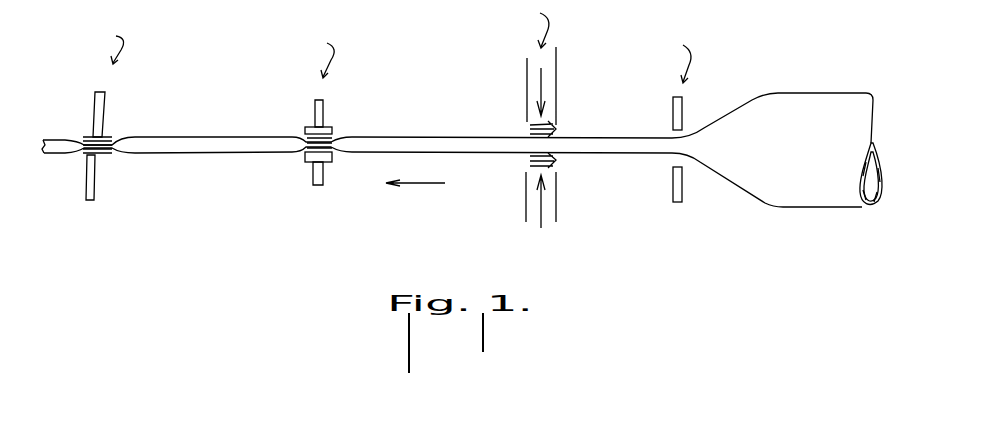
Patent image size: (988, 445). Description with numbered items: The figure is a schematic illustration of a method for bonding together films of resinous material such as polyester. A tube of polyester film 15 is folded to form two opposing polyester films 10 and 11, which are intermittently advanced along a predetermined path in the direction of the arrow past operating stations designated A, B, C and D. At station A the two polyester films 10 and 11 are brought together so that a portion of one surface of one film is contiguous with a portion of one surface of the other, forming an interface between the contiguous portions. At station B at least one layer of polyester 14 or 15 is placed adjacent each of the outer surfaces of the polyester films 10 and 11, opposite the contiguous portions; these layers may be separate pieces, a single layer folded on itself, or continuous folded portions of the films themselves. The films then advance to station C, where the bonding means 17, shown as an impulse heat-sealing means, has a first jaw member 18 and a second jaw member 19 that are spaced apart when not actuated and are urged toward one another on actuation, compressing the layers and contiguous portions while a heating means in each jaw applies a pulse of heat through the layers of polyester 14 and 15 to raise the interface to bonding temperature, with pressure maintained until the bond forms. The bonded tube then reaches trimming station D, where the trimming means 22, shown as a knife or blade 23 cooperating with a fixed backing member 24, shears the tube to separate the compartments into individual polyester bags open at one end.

The polyester film 10 is at (788, 93).
The polyester film 11 is at (783, 209).
The layer of polyester 14 is at (540, 127).
The layer of polyester 15 is at (517, 163).
The bonding means 17 is at (353, 116).
The first jaw member 18 is at (305, 127).
The second jaw member 19 is at (308, 163).
The trimming means 22 is at (132, 120).
The knife or blade 23 is at (96, 96).
The fixed backing member 24 is at (96, 181).